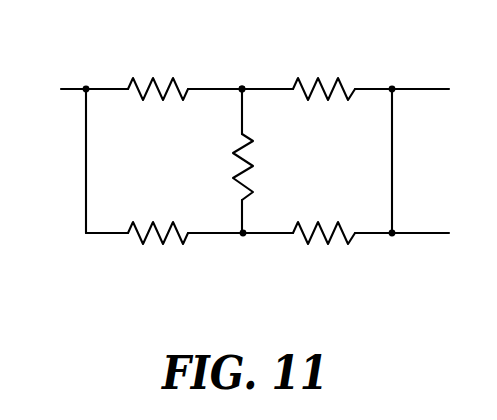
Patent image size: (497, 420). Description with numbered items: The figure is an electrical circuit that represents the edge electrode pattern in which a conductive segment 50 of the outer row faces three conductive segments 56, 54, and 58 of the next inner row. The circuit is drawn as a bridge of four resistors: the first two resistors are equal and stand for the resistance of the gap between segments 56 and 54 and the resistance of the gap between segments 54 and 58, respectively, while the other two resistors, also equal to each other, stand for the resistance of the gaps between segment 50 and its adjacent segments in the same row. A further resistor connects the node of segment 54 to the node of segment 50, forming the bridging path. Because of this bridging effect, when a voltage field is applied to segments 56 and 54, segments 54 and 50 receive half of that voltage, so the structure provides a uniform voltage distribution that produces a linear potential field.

The conductive segment 50 is at (218, 233).
The conductive segment 54 is at (242, 89).
The conductive segment 56 is at (105, 89).
The conductive segment 58 is at (378, 89).